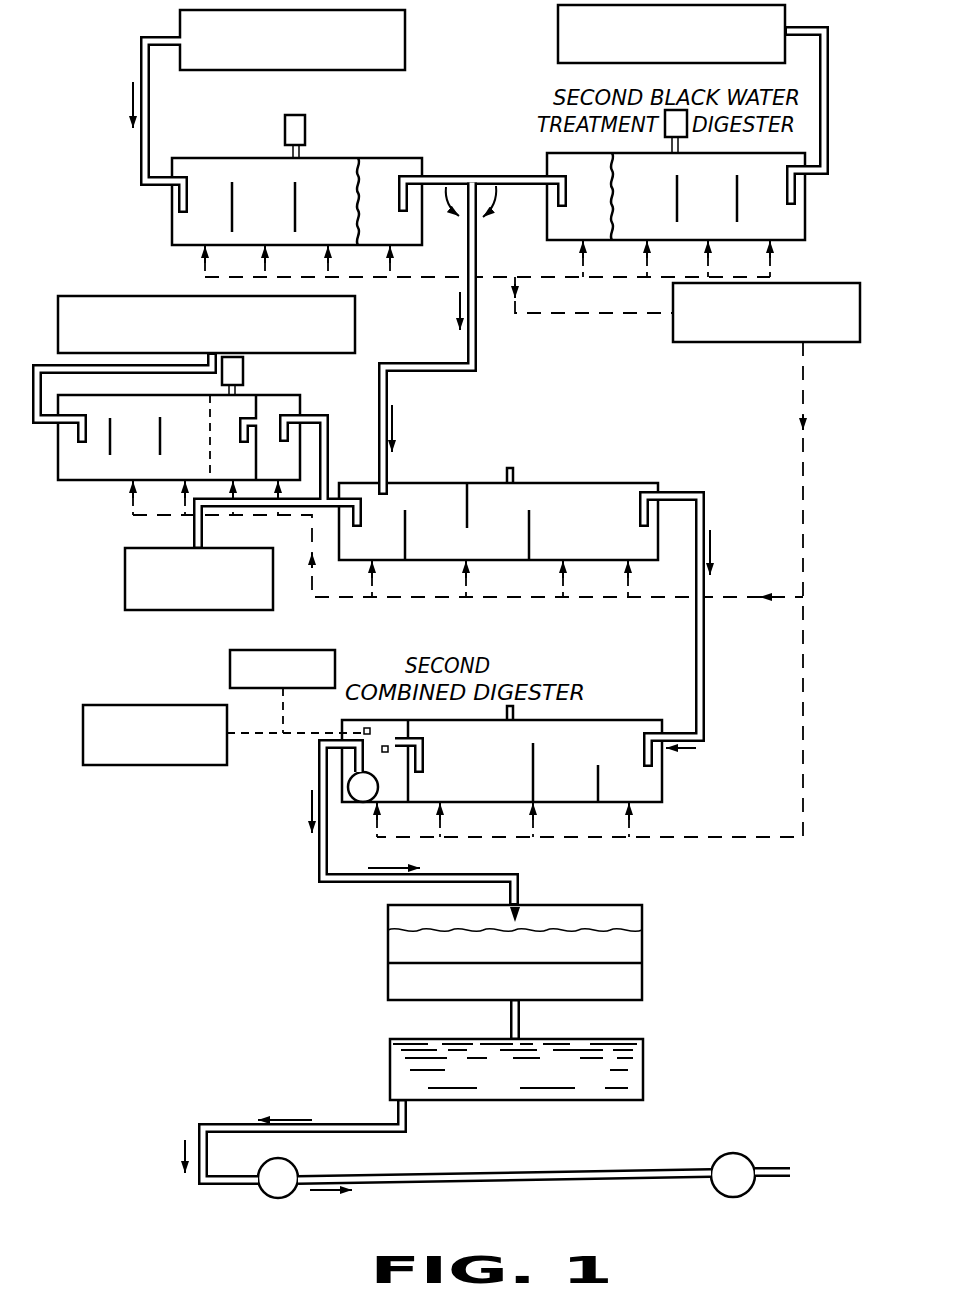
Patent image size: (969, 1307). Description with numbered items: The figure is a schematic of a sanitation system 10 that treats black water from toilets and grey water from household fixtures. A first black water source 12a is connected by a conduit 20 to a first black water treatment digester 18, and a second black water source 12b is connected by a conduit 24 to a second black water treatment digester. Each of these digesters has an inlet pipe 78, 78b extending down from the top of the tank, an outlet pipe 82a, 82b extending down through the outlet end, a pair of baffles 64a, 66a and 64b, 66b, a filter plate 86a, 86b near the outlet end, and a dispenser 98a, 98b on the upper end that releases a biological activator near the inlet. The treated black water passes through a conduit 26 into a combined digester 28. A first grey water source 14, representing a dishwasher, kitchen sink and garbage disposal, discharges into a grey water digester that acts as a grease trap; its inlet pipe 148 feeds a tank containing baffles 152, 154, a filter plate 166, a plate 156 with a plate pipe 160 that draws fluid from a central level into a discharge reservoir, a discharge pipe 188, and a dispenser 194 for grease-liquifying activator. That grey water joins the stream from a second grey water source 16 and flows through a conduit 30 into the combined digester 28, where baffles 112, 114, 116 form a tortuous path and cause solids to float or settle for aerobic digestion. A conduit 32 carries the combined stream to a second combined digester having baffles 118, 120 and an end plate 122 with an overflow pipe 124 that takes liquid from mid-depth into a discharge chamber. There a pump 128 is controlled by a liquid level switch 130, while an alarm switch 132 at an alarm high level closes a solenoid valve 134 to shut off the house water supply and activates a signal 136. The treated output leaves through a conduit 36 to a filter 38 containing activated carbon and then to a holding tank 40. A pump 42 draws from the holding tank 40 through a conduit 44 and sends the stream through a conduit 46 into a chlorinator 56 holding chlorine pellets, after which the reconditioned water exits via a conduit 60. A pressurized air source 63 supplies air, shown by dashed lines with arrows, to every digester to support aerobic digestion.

The sanitation system 10 is at (469, 76).
The first black water source 12a is at (405, 33).
The second black water source 12b is at (556, 46).
The first grey water source 14 is at (148, 296).
The second grey water source 16 is at (170, 614).
The first black water treatment digester 18 is at (412, 158).
The conduit 20 is at (140, 165).
The conduit 24 is at (829, 114).
The conduit 26 is at (478, 362).
The combined digester 28 is at (421, 483).
The conduit 30 is at (332, 492).
The conduit 32 is at (706, 640).
The conduit 36 is at (455, 870).
The filter 38 is at (567, 903).
The holding tank 40 is at (605, 1039).
The pump 42 is at (258, 1200).
The conduit 44 is at (215, 1125).
The conduit 46 is at (525, 1185).
The chlorinator 56 is at (737, 1152).
The conduit 60 is at (777, 1178).
The pressurized air source 63 is at (702, 342).
The baffle 64a is at (211, 207).
The baffle 64b is at (736, 207).
The baffle 66a is at (294, 196).
The baffle 66b is at (676, 208).
The inlet pipe 78 is at (175, 205).
The inlet pipe 78b is at (796, 198).
The outlet pipe 82a is at (401, 200).
The outlet pipe 82b is at (558, 198).
The filter plate 86a is at (357, 196).
The filter plate 86b is at (614, 178).
The dispenser 98a is at (310, 122).
The dispenser 98b is at (663, 112).
The baffle 112 is at (406, 525).
The baffle 114 is at (468, 507).
The baffle 116 is at (530, 525).
The baffle 118 is at (532, 771).
The baffle 120 is at (597, 769).
The end plate 122 is at (410, 783).
The overflow pipe 124 is at (424, 760).
The pump 128 is at (348, 782).
The liquid level switch 130 is at (388, 745).
The alarm switch 132 is at (364, 728).
The solenoid valve 134 is at (170, 765).
The signal 136 is at (300, 650).
The inlet pipe 148 is at (80, 440).
The baffle 152 is at (112, 422).
The baffle 154 is at (159, 442).
The plate 156 is at (256, 461).
The plate pipe 160 is at (240, 434).
The filter plate 166 is at (210, 424).
The discharge pipe 188 is at (300, 418).
The dispenser 194 is at (244, 369).